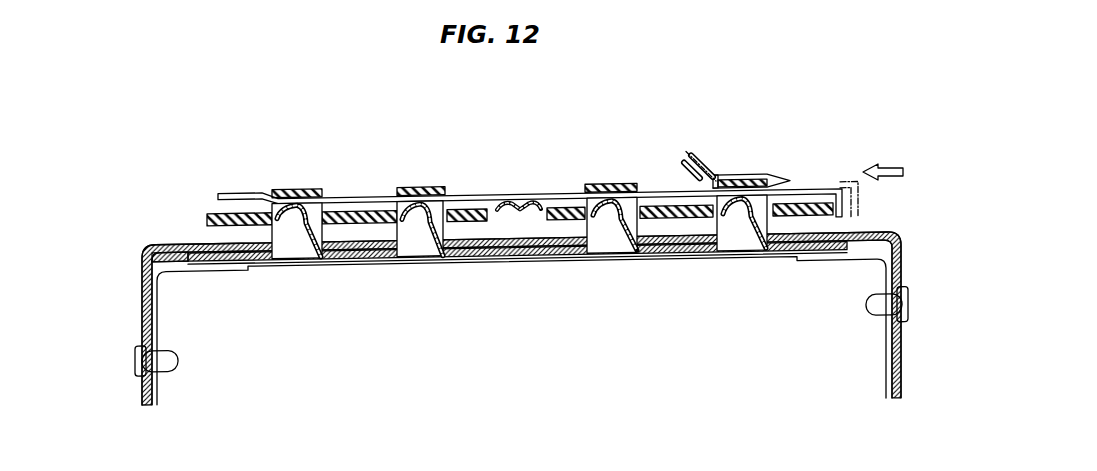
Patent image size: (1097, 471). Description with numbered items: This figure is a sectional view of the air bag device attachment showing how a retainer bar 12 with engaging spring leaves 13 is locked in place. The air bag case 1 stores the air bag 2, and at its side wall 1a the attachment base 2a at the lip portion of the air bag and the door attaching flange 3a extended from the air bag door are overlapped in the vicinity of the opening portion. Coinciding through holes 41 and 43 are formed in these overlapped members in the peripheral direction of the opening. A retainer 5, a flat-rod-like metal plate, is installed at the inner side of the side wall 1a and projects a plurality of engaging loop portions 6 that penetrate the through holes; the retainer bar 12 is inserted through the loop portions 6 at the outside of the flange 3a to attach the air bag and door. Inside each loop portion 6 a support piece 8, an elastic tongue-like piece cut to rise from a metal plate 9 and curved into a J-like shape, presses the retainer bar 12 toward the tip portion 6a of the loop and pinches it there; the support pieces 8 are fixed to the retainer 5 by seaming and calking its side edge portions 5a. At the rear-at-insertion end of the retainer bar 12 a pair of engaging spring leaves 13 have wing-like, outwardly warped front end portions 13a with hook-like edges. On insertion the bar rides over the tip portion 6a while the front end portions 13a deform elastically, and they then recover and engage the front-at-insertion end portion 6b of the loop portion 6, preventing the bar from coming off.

The air bag case 1 is at (886, 219).
The case side wall 1a is at (173, 246).
The air bag 2 is at (893, 399).
The attachment base 2a is at (412, 263).
The door attaching flange 3a is at (208, 212).
The through hole 43 is at (268, 199).
The retainer 5 is at (567, 261).
The side edge portion 5a is at (713, 263).
The engaging loop portion 6 is at (299, 190).
The tip portion 6a is at (607, 180).
The front-at-insertion end portion 6b is at (717, 181).
The support piece 8 is at (302, 225).
The plate 9 is at (478, 263).
The retainer bar 12 is at (494, 204).
The engaging spring leaf 13 is at (747, 177).
The front end portion 13a is at (695, 160).
The through hole 41 is at (284, 262).